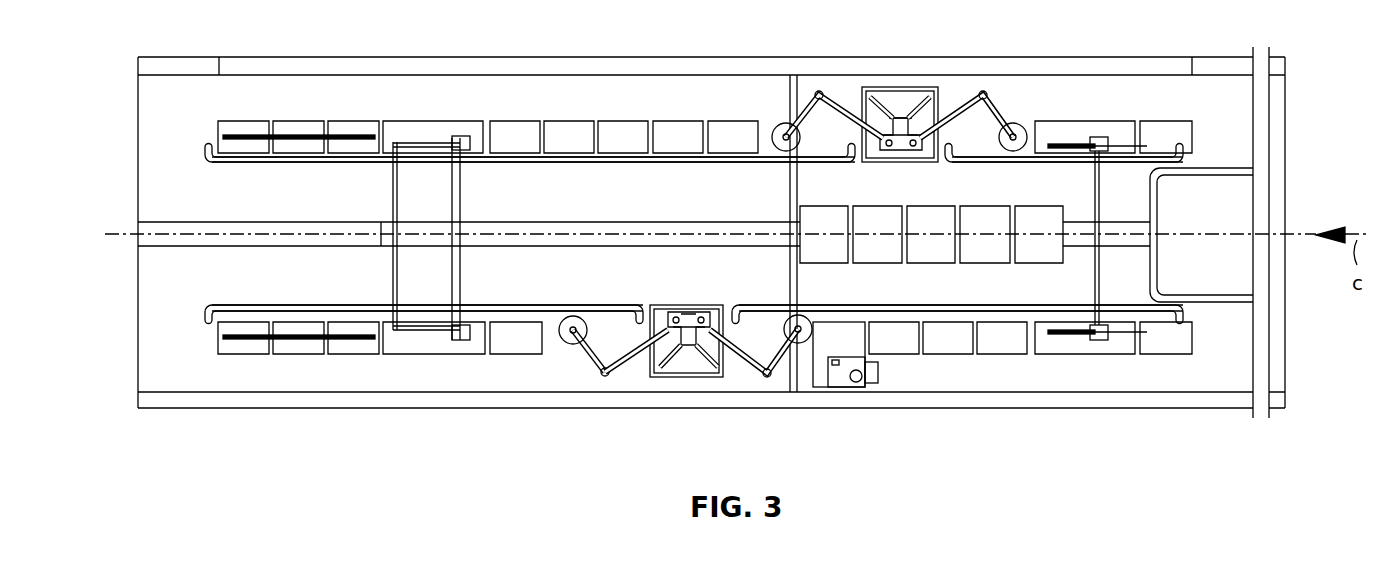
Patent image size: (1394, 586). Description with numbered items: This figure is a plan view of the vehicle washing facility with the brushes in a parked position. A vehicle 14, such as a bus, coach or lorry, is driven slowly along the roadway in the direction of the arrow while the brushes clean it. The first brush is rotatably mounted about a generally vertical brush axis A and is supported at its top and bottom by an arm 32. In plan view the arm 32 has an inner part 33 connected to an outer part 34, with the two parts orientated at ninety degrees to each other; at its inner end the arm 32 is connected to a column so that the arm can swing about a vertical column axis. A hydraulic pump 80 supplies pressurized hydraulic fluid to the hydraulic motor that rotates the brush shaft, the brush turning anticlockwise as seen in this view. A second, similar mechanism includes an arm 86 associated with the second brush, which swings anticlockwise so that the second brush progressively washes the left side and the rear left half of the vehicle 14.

The vehicle 14 is at (1230, 190).
The arm 32 is at (620, 370).
The inner part 33 is at (637, 355).
The outer part 34 is at (590, 355).
The brush axis A is at (577, 342).
The hydraulic pump 80 is at (837, 377).
The arm 86 is at (747, 372).